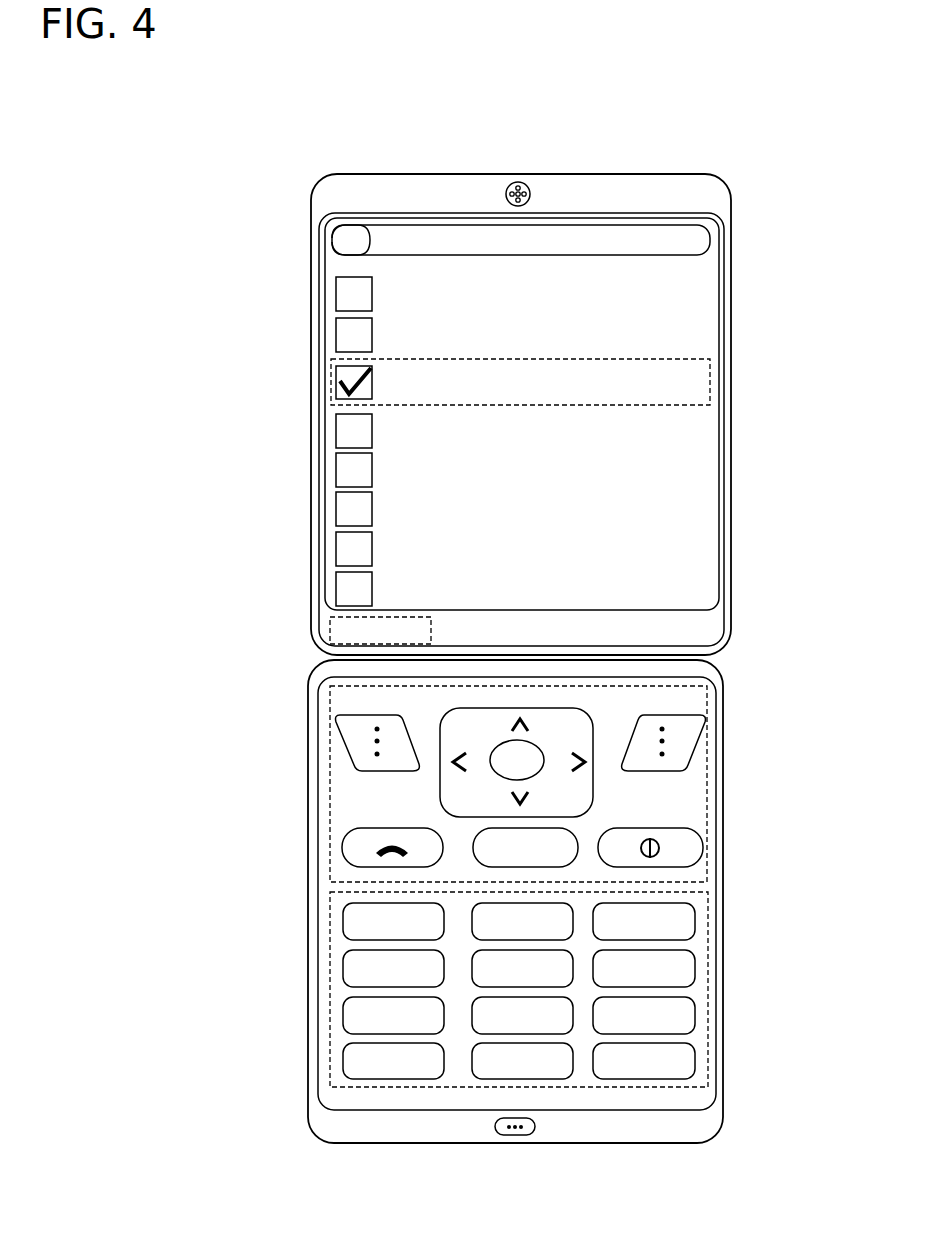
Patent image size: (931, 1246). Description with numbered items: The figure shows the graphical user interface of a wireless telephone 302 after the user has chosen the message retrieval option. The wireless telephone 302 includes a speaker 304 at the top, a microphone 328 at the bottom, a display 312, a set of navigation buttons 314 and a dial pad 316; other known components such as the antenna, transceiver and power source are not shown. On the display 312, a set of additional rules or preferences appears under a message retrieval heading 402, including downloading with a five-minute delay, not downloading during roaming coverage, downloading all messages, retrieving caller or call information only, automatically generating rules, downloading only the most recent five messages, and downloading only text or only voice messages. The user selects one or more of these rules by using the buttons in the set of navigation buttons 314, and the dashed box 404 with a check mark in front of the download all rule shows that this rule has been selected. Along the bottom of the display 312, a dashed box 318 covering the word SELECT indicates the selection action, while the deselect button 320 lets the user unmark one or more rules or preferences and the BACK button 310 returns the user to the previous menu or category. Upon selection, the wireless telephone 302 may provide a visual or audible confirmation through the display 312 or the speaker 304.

The wireless telephone 302 is at (520, 178).
The speaker 304 is at (531, 194).
The display 312 is at (724, 288).
The message retrieval heading 402 is at (706, 242).
The dashed box 404 is at (708, 358).
The dashed box covering SELECT 318 is at (431, 630).
The deselect button 320 is at (560, 624).
The BACK button 310 is at (627, 619).
The set of navigation buttons 314 is at (706, 786).
The dial pad 316 is at (708, 992).
The microphone 328 is at (520, 1137).